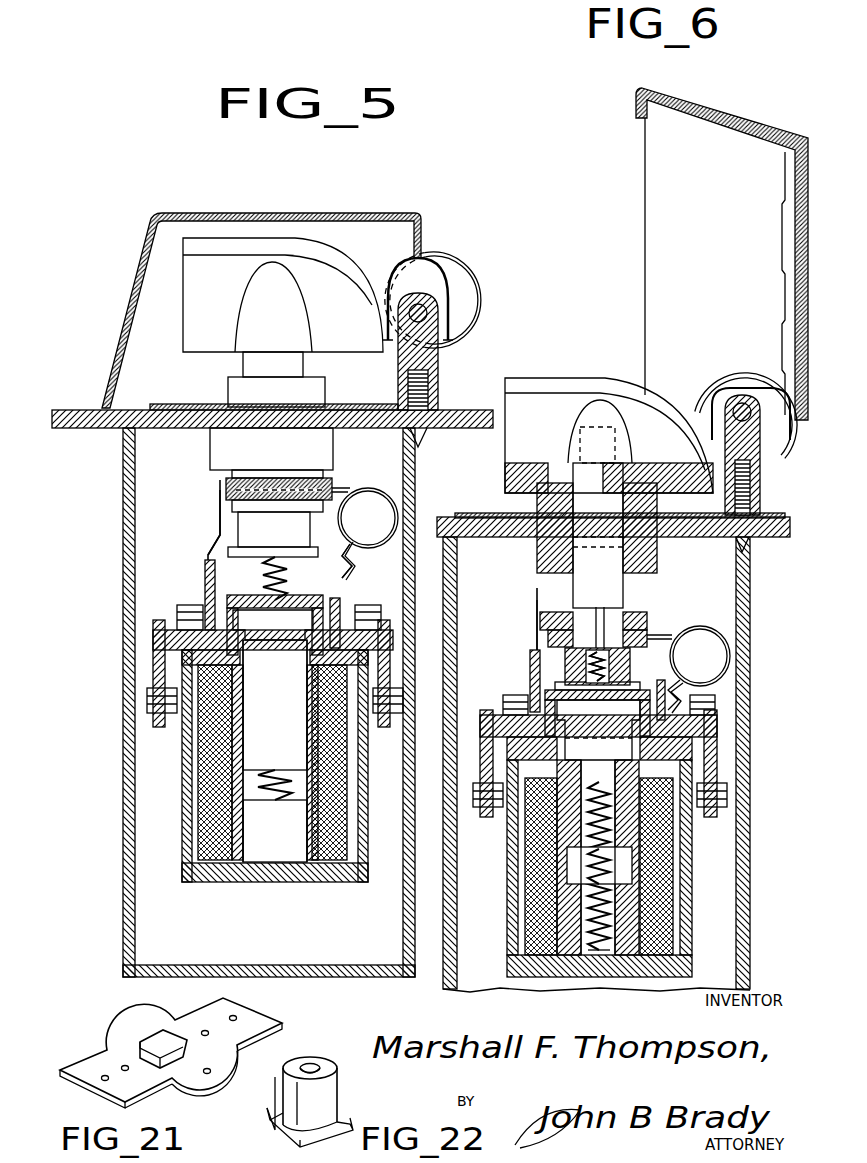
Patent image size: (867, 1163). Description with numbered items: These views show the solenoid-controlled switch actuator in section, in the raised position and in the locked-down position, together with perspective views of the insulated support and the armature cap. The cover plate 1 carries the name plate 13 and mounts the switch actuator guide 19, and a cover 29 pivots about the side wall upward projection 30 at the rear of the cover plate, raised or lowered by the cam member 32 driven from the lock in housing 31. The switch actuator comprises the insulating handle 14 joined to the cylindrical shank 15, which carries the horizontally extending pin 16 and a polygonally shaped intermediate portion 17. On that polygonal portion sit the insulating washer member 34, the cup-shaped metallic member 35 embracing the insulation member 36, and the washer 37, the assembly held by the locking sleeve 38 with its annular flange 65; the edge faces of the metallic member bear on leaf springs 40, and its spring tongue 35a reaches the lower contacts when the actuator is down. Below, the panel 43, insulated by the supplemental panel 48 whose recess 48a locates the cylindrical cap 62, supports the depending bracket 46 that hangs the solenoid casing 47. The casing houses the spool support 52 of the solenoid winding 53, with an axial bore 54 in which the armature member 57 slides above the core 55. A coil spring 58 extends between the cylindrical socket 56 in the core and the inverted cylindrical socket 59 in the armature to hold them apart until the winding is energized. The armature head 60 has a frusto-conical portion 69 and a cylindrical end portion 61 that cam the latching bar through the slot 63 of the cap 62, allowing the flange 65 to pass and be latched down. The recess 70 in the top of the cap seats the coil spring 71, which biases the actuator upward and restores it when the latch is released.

In FIG. 5, the cover plate 1 is at (88, 420).
In FIG. 6, the cover plate 1 is at (688, 540).
In FIG. 5, the name plate 13 is at (180, 405).
In FIG. 6, the name plate 13 is at (485, 517).
In FIG. 5, the switch actuator handle 14 is at (272, 282).
In FIG. 6, the switch actuator handle 14 is at (552, 398).
In FIG. 6, the cylindrical shank 15 is at (600, 500).
In FIG. 5, the horizontally extending pin 16 is at (300, 883).
In FIG. 6, the horizontally extending pin 16 is at (596, 548).
In FIG. 6, the polygonally shaped intermediate portion 17 is at (600, 616).
In FIG. 5, the switch actuator guide 19 is at (215, 455).
In FIG. 6, the switch actuator guide 19 is at (537, 560).
In FIG. 5, the cover 29 is at (358, 226).
In FIG. 6, the cover 29 is at (730, 138).
In FIG. 5, the side wall upward projection 30 is at (425, 355).
In FIG. 6, the side wall upward projection 30 is at (775, 400).
In FIG. 5, the lock housing 31 is at (460, 265).
In FIG. 6, the lock housing 31 is at (746, 416).
In FIG. 5, the cam member 32 is at (445, 320).
In FIG. 6, the cam member 32 is at (704, 412).
In FIG. 5, the insulating washer member 34 is at (325, 480).
In FIG. 6, the insulating washer member 34 is at (640, 618).
In FIG. 5, the metallic member 35 is at (365, 534).
In FIG. 6, the metallic member 35 is at (688, 656).
In FIG. 5, the spring tongue 35a is at (364, 553).
In FIG. 6, the spring tongue 35a is at (722, 665).
In FIG. 6, the insulation member 36 is at (656, 623).
In FIG. 5, the washer 37 is at (232, 506).
In FIG. 6, the washer 37 is at (648, 645).
In FIG. 5, the locking sleeve 38 is at (273, 534).
In FIG. 6, the locking sleeve 38 is at (565, 668).
In FIG. 5, the leaf springs 40 is at (211, 530).
In FIG. 6, the leaf springs 40 is at (529, 602).
In FIG. 5, the panel 43 is at (150, 645).
In FIG. 6, the panel 43 is at (720, 715).
In FIG. 6, the depending bracket 46 is at (605, 977).
In FIG. 5, the solenoid casing 47 is at (173, 809).
In FIG. 6, the solenoid casing 47 is at (520, 870).
In FIG. 5, the supplemental panel 48 is at (153, 665).
In FIG. 6, the supplemental panel 48 is at (720, 740).
In FIG. 21, the supplemental panel 48 is at (255, 1025).
In FIG. 21, the recess 48a is at (180, 1052).
In FIG. 5, the spool support 52 is at (235, 750).
In FIG. 5, the solenoid winding 53 is at (200, 828).
In FIG. 6, the solenoid winding 53 is at (525, 918).
In FIG. 5, the axial bore 54 is at (258, 775).
In FIG. 6, the axial bore 54 is at (632, 868).
In FIG. 5, the core 55 is at (265, 870).
In FIG. 6, the core 55 is at (565, 977).
In FIG. 6, the cylindrical socket 56 is at (615, 905).
In FIG. 5, the armature member 57 is at (275, 705).
In FIG. 6, the armature member 57 is at (598, 730).
In FIG. 5, the coil spring 58 is at (262, 800).
In FIG. 6, the coil spring 58 is at (628, 965).
In FIG. 6, the inverted cylindrical socket 59 is at (575, 818).
In FIG. 5, the armature head 60 is at (305, 600).
In FIG. 6, the armature head 60 is at (597, 713).
In FIG. 5, the cylindrical end portion 61 is at (205, 580).
In FIG. 5, the cylindrical cap 62 is at (342, 612).
In FIG. 6, the cylindrical cap 62 is at (530, 690).
In FIG. 22, the cylindrical cap 62 is at (330, 1097).
In FIG. 22, the slot 63 is at (290, 1097).
In FIG. 5, the annular flange 65 is at (212, 553).
In FIG. 6, the annular flange 65 is at (532, 672).
In FIG. 5, the frusto-conical portion 69 is at (272, 630).
In FIG. 22, the recess 70 is at (313, 1065).
In FIG. 5, the coil spring 71 is at (268, 578).
In FIG. 6, the coil spring 71 is at (580, 650).